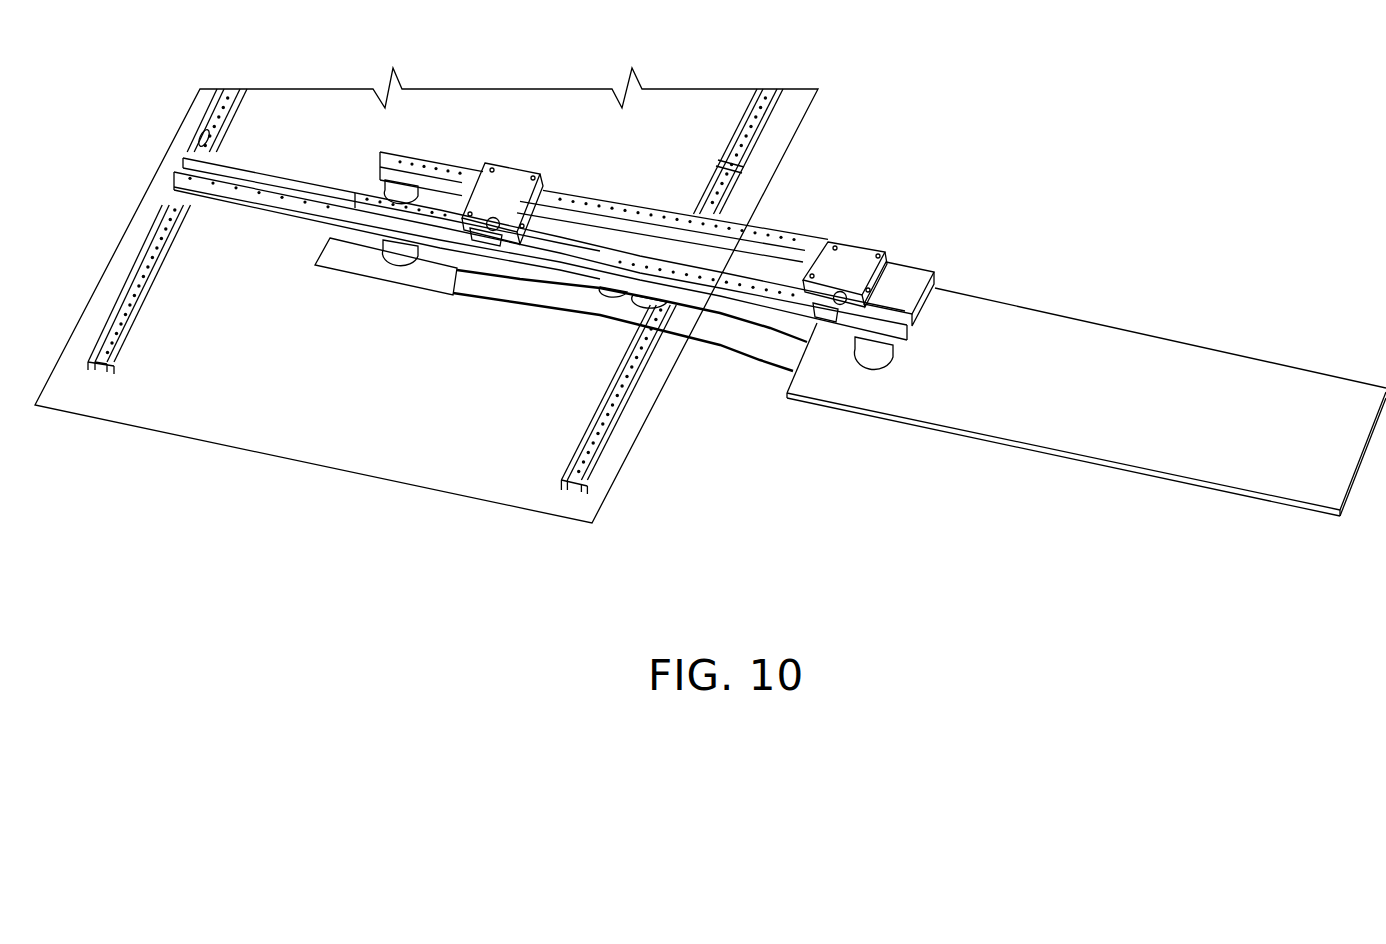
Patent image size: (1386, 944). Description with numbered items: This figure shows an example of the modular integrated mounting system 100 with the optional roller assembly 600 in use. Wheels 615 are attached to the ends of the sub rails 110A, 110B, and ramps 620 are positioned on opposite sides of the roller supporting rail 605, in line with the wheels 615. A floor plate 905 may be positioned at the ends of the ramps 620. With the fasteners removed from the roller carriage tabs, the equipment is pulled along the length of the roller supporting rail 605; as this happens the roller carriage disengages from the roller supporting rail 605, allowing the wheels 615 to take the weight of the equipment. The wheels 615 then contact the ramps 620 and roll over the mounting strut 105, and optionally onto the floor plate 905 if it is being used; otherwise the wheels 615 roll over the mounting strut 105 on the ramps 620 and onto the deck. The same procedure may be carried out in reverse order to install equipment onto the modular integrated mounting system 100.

The modular integrated mounting system 100 is at (353, 90).
The mounting strut 105 is at (600, 465).
The sub rail 110A is at (577, 258).
The sub rail 110B is at (614, 205).
The roller assembly 600 is at (840, 176).
The roller supporting rail 605 is at (233, 193).
The wheels 615 is at (410, 150).
The ramps 620 is at (713, 335).
The floor plate 905 is at (1205, 388).